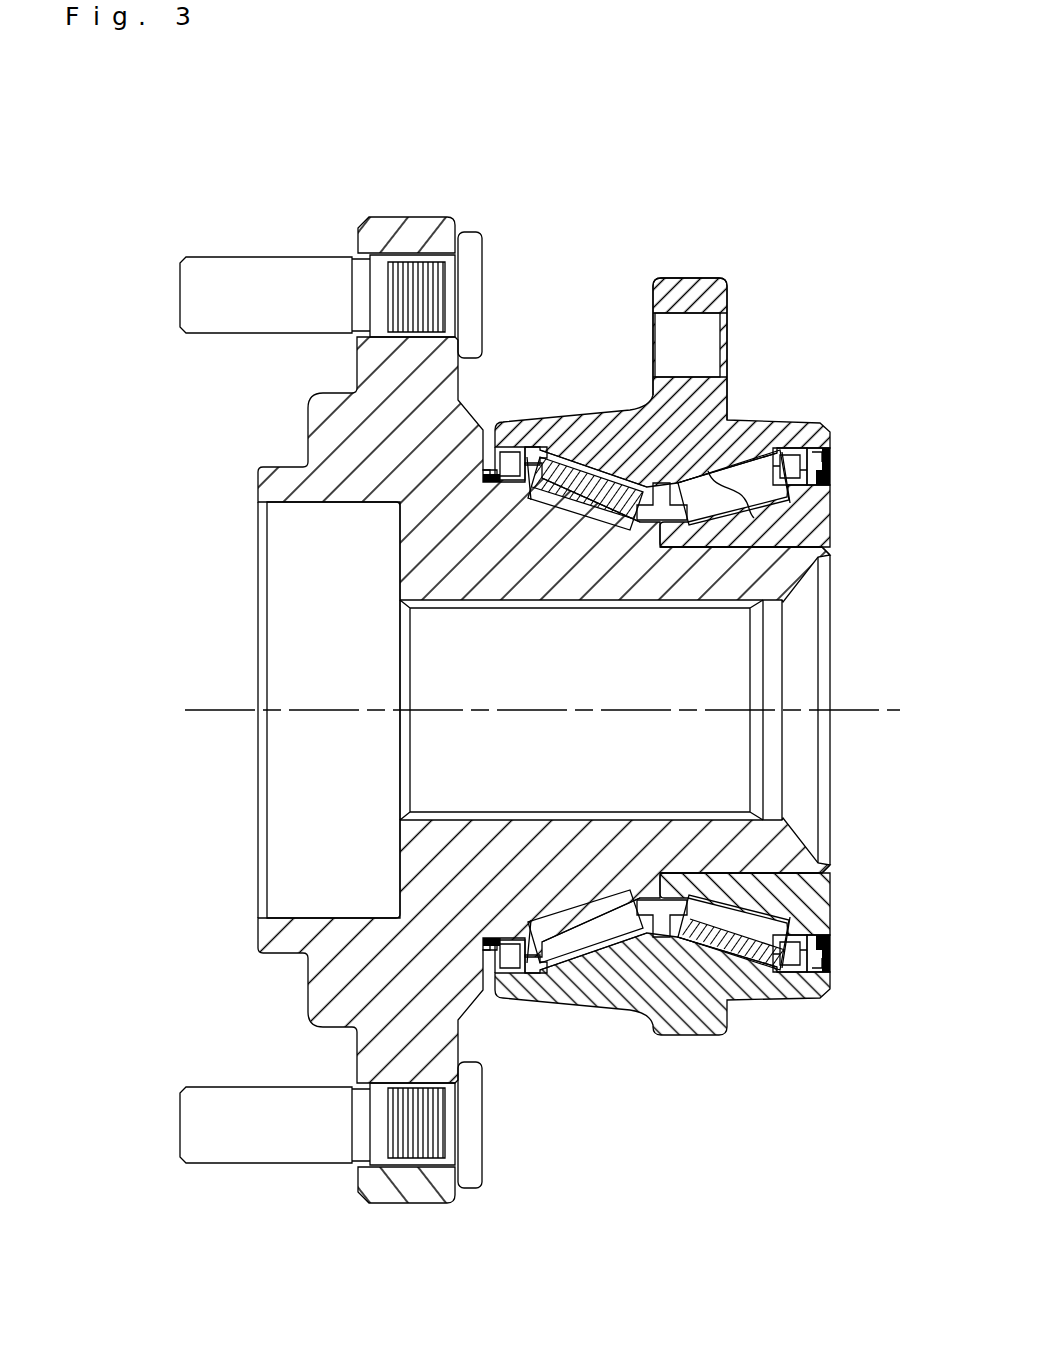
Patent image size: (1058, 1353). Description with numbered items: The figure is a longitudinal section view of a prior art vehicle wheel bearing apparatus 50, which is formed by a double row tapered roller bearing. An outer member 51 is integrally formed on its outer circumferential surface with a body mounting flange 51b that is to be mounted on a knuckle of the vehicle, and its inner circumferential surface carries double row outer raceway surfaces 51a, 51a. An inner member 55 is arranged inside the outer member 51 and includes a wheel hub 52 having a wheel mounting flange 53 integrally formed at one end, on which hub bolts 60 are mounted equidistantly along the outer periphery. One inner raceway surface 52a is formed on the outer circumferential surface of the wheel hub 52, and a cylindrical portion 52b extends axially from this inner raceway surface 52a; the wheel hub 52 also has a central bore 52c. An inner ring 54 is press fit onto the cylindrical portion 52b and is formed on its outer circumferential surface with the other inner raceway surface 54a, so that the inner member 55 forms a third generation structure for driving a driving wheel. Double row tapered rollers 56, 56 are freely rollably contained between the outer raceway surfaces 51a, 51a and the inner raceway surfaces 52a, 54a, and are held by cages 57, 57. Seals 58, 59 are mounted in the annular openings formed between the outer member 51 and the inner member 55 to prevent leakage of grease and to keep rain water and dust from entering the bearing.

The vehicle wheel bearing apparatus 50 is at (841, 313).
The outer member 51 is at (602, 418).
The outer raceway surfaces 51a is at (582, 510).
The body mounting flange 51b is at (693, 288).
The wheel hub 52 is at (347, 486).
The inner raceway surface 52a is at (540, 500).
The cylindrical portion 52b is at (710, 530).
The bore (serration hole) of hub wheel 52c is at (458, 608).
The wheel mounting flange 53 is at (402, 240).
The inner ring 54 is at (812, 522).
The inner raceway surface 54a is at (790, 550).
The inner member 55 is at (379, 557).
The tapered rollers 56 is at (690, 520).
The cages 57 is at (547, 448).
The seal 58 is at (487, 462).
The seal 59 is at (828, 460).
The hub bolts 60 is at (275, 257).